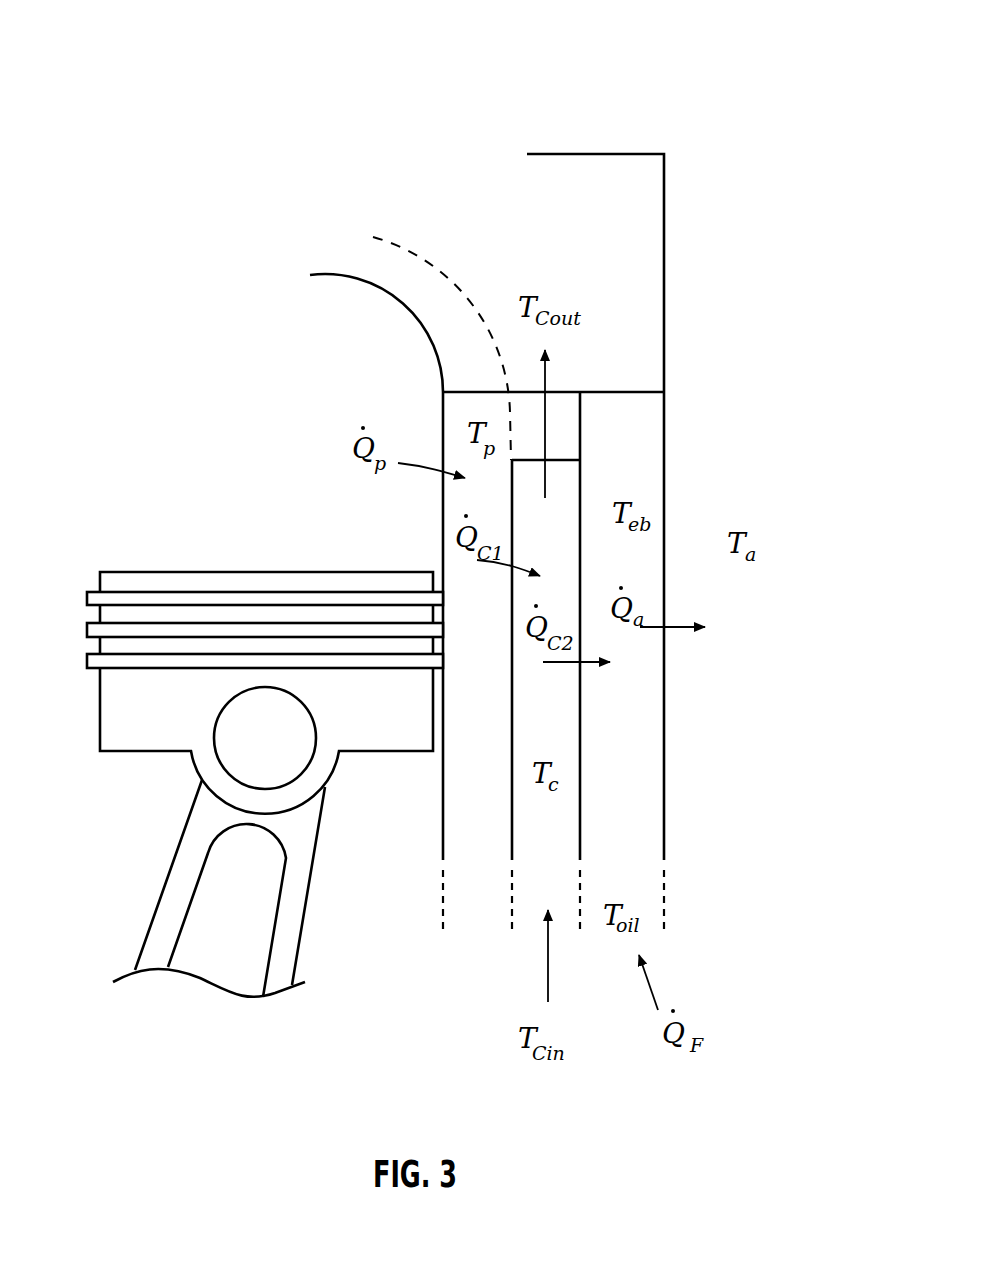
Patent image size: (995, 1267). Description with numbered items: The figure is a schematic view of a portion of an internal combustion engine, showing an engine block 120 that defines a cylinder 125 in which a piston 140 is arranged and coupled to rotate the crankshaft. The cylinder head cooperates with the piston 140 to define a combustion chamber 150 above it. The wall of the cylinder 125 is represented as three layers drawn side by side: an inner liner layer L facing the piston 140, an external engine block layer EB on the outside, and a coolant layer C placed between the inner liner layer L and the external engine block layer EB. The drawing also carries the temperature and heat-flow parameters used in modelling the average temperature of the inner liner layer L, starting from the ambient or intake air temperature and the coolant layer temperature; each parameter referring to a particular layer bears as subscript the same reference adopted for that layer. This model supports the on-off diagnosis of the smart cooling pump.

The engine block 120 is at (246, 50).
The cylinder 125 is at (657, 207).
The piston 140 is at (135, 570).
The combustion chamber 150 is at (267, 437).
The inner liner layer L is at (460, 845).
The coolant layer C is at (563, 832).
The external engine block layer EB is at (657, 435).